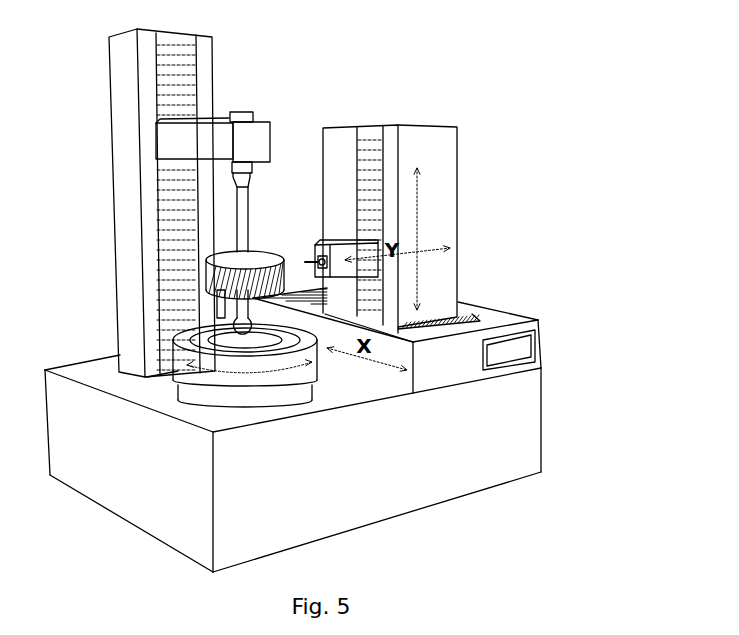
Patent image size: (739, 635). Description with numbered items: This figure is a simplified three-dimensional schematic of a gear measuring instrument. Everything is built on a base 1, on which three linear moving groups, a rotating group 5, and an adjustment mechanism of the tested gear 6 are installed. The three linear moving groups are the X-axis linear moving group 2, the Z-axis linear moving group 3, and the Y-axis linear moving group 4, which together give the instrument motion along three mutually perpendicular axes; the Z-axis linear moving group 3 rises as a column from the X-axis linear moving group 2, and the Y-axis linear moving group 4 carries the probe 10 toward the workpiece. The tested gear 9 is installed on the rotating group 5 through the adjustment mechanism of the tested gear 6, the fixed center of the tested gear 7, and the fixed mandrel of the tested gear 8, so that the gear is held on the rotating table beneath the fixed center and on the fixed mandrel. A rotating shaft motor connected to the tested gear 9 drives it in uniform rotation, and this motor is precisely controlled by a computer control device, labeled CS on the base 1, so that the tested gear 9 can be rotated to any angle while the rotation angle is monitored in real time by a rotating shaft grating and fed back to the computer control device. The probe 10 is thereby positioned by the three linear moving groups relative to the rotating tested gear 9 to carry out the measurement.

The base 1 is at (515, 403).
The X-axis linear moving group 2 is at (490, 320).
The Z-axis linear moving group 3 is at (443, 185).
The Y-axis linear moving group 4 is at (352, 242).
The rotating group 5 is at (190, 372).
The adjustment mechanism of tested gear 6 is at (127, 190).
The fixed center of tested gear 7 is at (249, 168).
The fixed mandrel of tested gear 8 is at (247, 208).
The tested gear 9 is at (257, 258).
The probe 10 is at (316, 257).